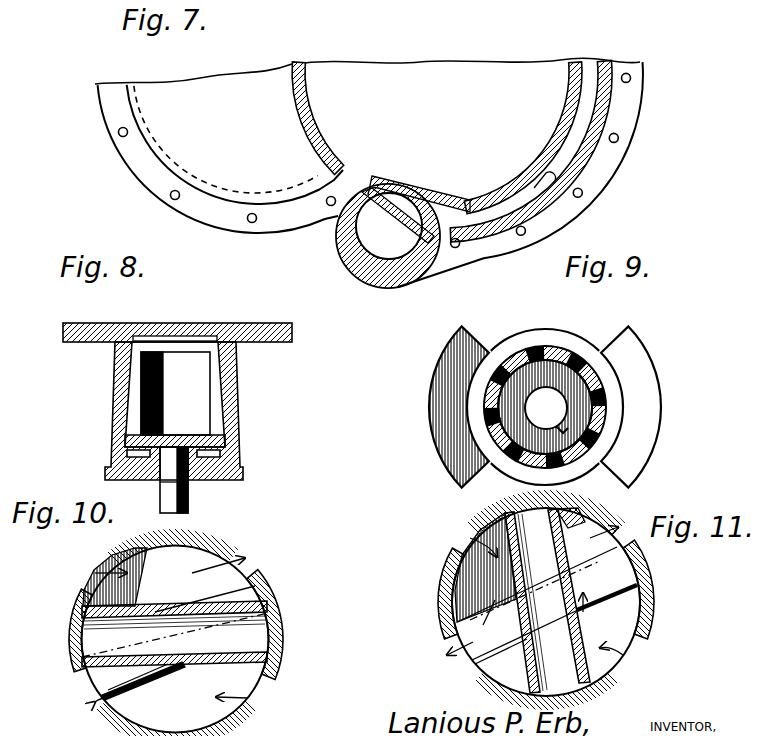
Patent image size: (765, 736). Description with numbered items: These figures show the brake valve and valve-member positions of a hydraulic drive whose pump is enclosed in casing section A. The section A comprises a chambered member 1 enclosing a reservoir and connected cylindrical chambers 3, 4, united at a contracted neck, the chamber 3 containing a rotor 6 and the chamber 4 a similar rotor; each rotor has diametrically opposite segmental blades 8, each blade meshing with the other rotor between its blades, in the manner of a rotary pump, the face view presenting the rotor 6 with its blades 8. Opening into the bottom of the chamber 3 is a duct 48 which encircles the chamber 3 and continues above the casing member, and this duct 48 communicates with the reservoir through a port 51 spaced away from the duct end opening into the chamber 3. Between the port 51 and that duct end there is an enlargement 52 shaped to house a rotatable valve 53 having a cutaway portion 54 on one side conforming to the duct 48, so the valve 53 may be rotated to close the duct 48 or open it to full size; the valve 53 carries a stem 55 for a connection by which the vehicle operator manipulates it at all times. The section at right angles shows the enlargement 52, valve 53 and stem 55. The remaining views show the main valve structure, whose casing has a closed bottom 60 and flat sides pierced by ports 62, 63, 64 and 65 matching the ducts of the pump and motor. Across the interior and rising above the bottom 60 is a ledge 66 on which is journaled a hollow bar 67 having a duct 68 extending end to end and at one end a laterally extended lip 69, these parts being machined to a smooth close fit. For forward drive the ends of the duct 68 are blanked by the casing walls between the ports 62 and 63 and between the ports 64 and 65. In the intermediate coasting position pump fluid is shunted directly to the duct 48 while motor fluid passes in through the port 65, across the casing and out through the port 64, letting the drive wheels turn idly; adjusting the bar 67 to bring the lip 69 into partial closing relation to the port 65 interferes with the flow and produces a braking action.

In FIG. 7, the chambered member 1 is at (605, 76).
In FIG. 7, the chamber 3 is at (437, 138).
In FIG. 7, the chamber 4 is at (220, 159).
In FIG. 7, the duct 48 is at (583, 117).
In FIG. 7, the port 51 is at (532, 188).
In FIG. 7, the enlargement 52 is at (407, 283).
In FIG. 8, the enlargement 52 is at (240, 423).
In FIG. 7, the rotatable valve 53 is at (388, 245).
In FIG. 8, the rotatable valve 53 is at (175, 399).
In FIG. 7, the cutaway portion 54 is at (405, 208).
In FIG. 8, the stem 55 is at (189, 495).
In FIG. 7, the closed bottom 60 is at (322, 6).
In FIG. 7, the casing section A is at (370, 63).
In FIG. 9, the rotor 6 is at (553, 407).
In FIG. 9, the blades 8 is at (677, 373).
In FIG. 10, the port 62 is at (120, 550).
In FIG. 11, the port 62 is at (473, 525).
In FIG. 10, the port 63 is at (80, 675).
In FIG. 11, the port 63 is at (473, 675).
In FIG. 10, the port 64 is at (228, 546).
In FIG. 11, the port 64 is at (598, 524).
In FIG. 10, the port 65 is at (252, 710).
In FIG. 11, the port 65 is at (623, 668).
In FIG. 10, the ledge 66 is at (123, 678).
In FIG. 11, the ledge 66 is at (537, 605).
In FIG. 10, the hollow bar 67 is at (153, 600).
In FIG. 11, the hollow bar 67 is at (607, 610).
In FIG. 10, the duct 68 is at (175, 635).
In FIG. 11, the duct 68 is at (547, 601).
In FIG. 10, the lip 69 is at (256, 670).
In FIG. 11, the lip 69 is at (570, 526).